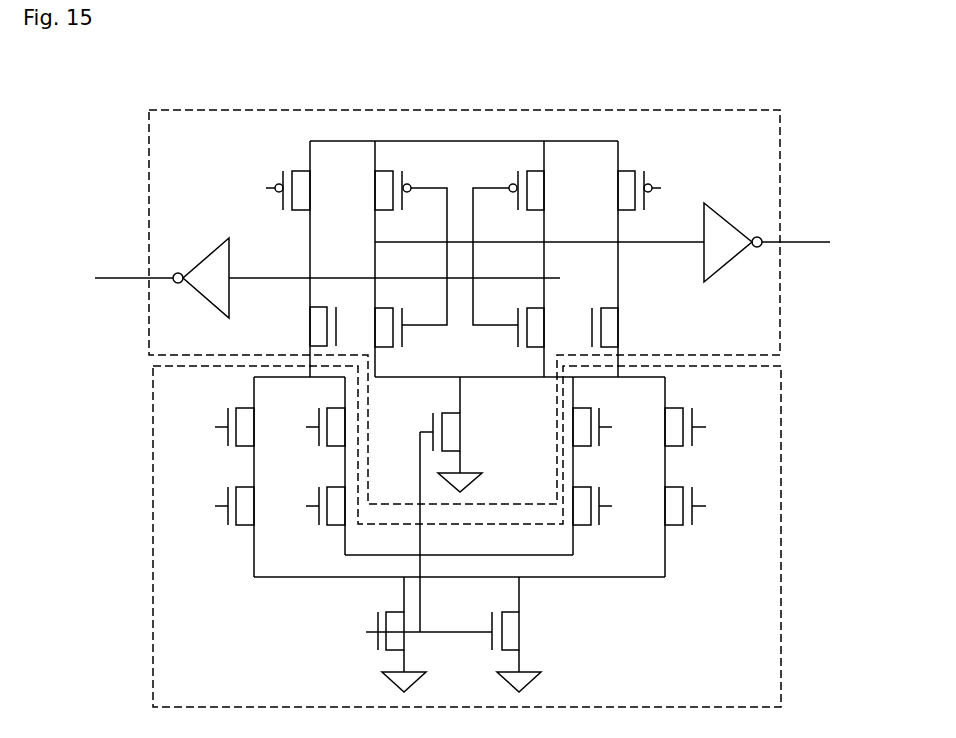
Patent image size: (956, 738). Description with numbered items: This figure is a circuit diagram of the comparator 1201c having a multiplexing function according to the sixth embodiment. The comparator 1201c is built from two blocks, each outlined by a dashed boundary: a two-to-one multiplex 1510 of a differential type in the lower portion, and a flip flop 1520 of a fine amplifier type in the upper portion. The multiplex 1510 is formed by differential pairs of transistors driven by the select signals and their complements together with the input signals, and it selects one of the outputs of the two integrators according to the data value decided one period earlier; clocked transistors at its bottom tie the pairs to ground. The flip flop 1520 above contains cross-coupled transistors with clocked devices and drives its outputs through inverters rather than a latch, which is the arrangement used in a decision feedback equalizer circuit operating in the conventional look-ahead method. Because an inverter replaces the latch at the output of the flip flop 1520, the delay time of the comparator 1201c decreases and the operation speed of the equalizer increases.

The comparator having a multiplexing function 1201c is at (106, 114).
The flip flop 1520 is at (465, 110).
The 2-to-1 multiplex 1510 is at (153, 452).